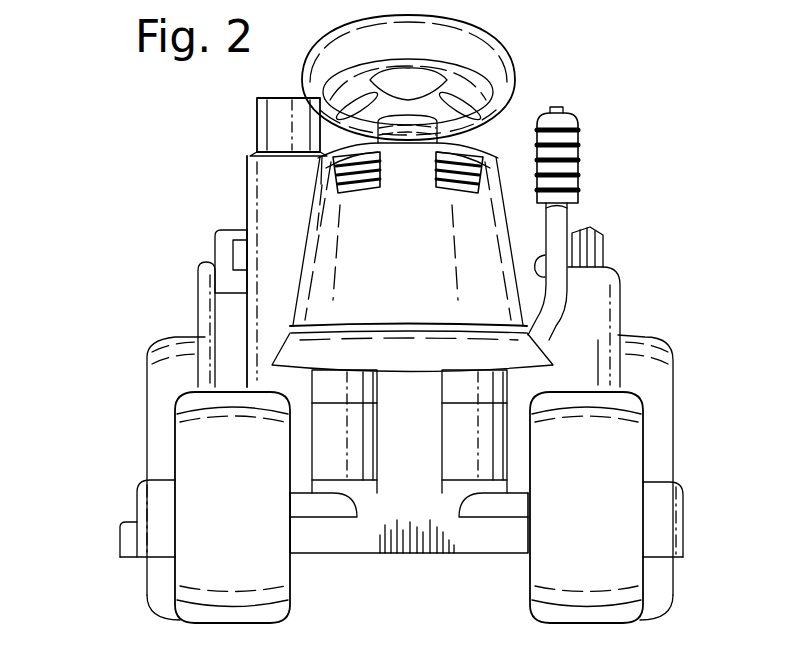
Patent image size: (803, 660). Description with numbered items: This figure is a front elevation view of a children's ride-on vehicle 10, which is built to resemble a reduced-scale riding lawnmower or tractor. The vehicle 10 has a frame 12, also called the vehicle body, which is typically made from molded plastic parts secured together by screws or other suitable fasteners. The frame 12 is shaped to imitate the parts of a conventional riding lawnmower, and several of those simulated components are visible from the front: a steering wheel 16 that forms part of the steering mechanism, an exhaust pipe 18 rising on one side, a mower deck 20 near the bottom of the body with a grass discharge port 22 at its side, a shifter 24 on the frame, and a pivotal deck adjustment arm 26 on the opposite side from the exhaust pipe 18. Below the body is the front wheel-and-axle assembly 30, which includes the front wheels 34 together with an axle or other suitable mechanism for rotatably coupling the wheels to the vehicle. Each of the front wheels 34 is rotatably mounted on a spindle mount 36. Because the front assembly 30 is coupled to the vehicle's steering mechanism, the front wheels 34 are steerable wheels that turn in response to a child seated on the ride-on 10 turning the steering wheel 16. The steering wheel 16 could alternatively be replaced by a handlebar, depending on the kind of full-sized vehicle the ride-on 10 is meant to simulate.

The children's ride-on vehicle 10 is at (104, 206).
The frame 12 is at (198, 312).
The steering wheel 16 is at (498, 42).
The exhaust pipe 18 is at (256, 134).
The mower deck 20 is at (136, 488).
The grass discharge port 22 is at (130, 521).
The shifter 24 is at (237, 230).
The deck adjustment arm 26 is at (578, 124).
The front wheel-and-axle assembly 30 is at (397, 560).
The front wheels 34 is at (244, 514).
The spindle mounts 36 is at (447, 491).